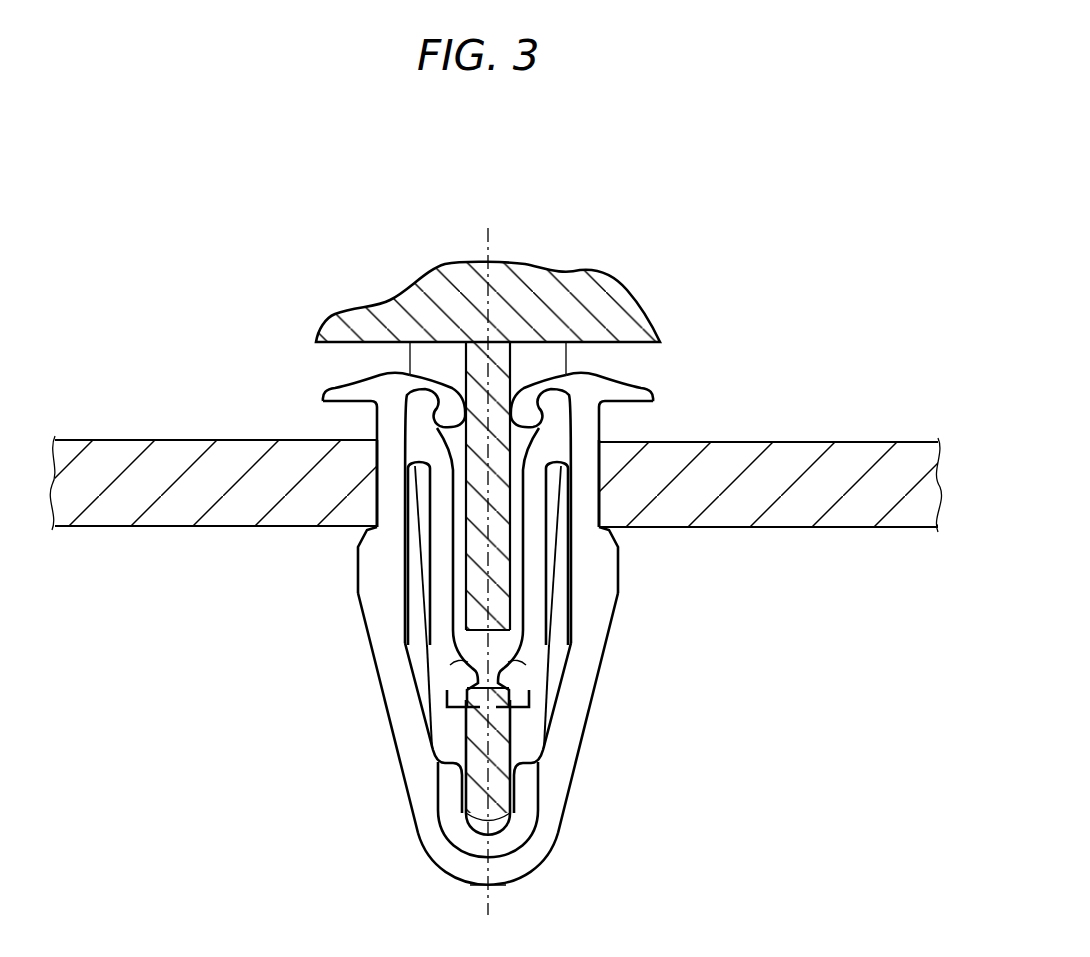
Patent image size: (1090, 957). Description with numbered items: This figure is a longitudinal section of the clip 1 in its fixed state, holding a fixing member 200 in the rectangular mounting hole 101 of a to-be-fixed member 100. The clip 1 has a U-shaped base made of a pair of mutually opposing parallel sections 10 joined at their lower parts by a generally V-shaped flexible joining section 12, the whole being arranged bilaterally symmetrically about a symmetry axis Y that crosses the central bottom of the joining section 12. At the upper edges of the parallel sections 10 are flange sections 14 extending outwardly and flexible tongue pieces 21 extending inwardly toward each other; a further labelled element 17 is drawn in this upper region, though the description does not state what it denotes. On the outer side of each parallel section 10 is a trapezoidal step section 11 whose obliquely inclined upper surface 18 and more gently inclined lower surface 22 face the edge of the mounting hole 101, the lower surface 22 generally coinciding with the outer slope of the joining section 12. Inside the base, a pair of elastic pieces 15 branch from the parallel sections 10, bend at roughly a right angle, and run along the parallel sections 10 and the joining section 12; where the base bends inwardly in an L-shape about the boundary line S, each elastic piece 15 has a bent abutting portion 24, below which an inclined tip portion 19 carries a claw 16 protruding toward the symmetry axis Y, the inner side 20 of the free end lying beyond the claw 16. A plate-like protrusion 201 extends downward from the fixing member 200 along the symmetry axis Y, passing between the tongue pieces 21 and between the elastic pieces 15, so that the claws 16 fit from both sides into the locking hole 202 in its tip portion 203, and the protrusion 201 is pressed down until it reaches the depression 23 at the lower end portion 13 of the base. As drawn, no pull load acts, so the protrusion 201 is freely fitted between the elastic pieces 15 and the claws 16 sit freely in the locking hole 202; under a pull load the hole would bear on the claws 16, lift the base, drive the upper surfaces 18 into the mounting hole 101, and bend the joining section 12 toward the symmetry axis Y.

The clip 1 is at (786, 661).
The parallel sections 10 is at (374, 481).
The step sections 11 is at (360, 566).
The joining section 12 is at (422, 778).
The lower end portion 13 is at (483, 872).
The flange sections 14 is at (383, 378).
The elastic pieces 15 is at (435, 626).
The claws 16 is at (437, 678).
The elastic engaging piece 17 is at (375, 430).
The upper surface 18 is at (378, 528).
The tip portion 19 is at (430, 717).
The inner side 20 is at (463, 813).
The flexible tongue pieces 21 is at (411, 367).
The lower surface 22 is at (360, 607).
The depression 23 is at (463, 815).
The abutting portion 24 is at (433, 662).
The to-be-fixed member 100 is at (864, 441).
The mounting hole 101 is at (605, 583).
The fixing member 200 is at (658, 305).
The protrusion 201 is at (365, 550).
The locking hole 202 is at (545, 696).
The tip portion 203 is at (543, 817).
The boundary line S is at (448, 658).
The symmetry axis Y is at (488, 240).